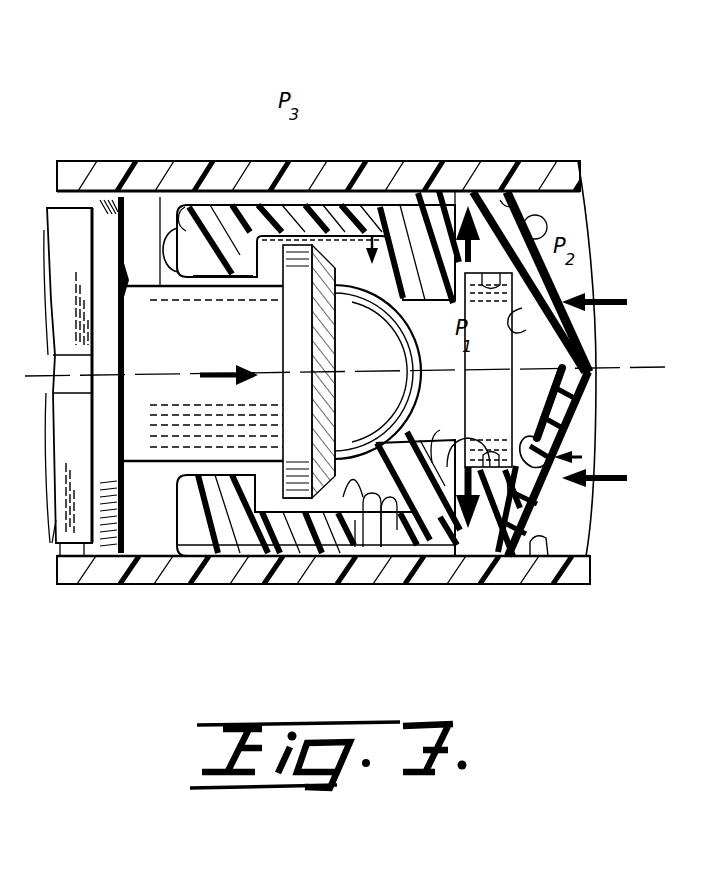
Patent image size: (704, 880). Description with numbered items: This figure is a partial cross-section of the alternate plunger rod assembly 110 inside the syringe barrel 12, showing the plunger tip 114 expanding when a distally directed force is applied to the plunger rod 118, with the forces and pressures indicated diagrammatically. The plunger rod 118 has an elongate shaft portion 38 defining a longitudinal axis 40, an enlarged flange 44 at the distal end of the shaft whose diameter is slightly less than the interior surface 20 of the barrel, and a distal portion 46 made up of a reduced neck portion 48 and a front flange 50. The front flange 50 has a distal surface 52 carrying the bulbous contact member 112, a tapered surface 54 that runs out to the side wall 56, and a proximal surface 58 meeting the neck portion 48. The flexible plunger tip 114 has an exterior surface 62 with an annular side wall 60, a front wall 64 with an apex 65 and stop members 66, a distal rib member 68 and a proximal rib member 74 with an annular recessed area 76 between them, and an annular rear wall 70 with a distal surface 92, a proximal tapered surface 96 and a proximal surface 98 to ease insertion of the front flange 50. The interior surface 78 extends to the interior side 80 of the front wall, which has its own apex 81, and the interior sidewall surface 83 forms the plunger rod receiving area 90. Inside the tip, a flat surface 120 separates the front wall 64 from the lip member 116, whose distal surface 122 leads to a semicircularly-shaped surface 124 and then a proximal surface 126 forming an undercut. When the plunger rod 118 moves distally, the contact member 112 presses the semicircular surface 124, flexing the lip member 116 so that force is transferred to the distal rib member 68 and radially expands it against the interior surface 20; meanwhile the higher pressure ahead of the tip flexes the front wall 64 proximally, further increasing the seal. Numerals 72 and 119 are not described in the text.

The syringe barrel 12 is at (128, 194).
The interior surface 20 is at (149, 192).
The shaft portion 38 is at (80, 556).
The longitudinal axis 40 is at (628, 372).
The enlarged flange 44 is at (116, 224).
The distal portion 46 is at (137, 500).
The neck portion 48 is at (157, 462).
The front flange 50 is at (336, 517).
The distal surface 52 is at (378, 515).
The tapered surface 54 is at (364, 515).
The side wall 56 is at (298, 512).
The proximal surface 58 is at (270, 584).
The annular side wall 60 is at (428, 560).
The exterior surface 62 is at (586, 582).
The front wall 64 is at (0, 453).
The apex 65 is at (0, 392).
The stop members 66 is at (51, 265).
The distal rib member 68 is at (462, 193).
The rear wall 70 is at (210, 560).
The sleeve lower portion 72 is at (172, 515).
The proximal rib member 74 is at (224, 203).
The annular recessed area 76 is at (405, 214).
The interior surface 78 is at (50, 305).
The interior side 80 is at (3, 515).
The apex 81 is at (0, 395).
The interior sidewall surface 83 is at (372, 540).
The plunger rod receiving area 90 is at (352, 280).
The distal surface 92 is at (246, 262).
The proximal tapered surface 96 is at (177, 228).
The proximal surface 98 is at (210, 196).
The plunger rod assembly 110 is at (72, 240).
The contact member 112 is at (348, 283).
The plunger tip 114 is at (602, 462).
The lip member 116 is at (514, 584).
The plunger rod 118 is at (62, 240).
The cap lower edge 119 is at (23, 555).
The flat surface 120 is at (506, 200).
The distal surface 122 is at (431, 200).
The semicircularly-shaped surface 124 is at (494, 556).
The proximal surface 126 is at (414, 548).